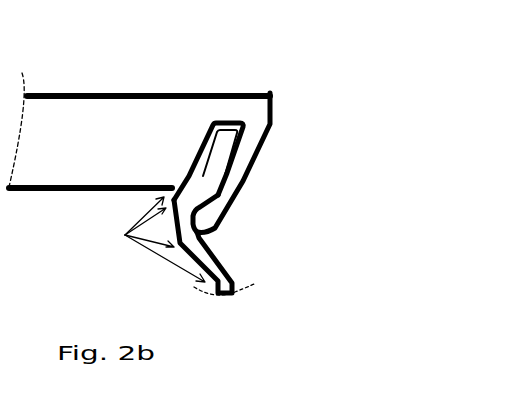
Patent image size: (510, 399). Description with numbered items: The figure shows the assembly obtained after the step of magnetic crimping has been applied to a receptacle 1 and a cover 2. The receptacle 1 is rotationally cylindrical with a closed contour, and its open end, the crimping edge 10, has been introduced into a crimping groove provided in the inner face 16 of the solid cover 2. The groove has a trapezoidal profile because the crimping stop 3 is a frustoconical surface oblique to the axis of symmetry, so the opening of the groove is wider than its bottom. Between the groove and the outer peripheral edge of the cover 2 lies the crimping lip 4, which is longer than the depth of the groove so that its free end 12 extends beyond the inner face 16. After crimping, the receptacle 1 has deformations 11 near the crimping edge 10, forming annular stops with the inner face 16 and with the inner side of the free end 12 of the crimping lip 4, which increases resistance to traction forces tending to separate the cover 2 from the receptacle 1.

The receptacle 1 is at (230, 283).
The cover 2 is at (98, 113).
The crimping stop 3 is at (200, 150).
The crimping lip 4 is at (262, 143).
The crimping edge 10 is at (213, 160).
The deformations 11 is at (146, 239).
The free end 12 is at (198, 216).
The inner face 16 is at (68, 192).